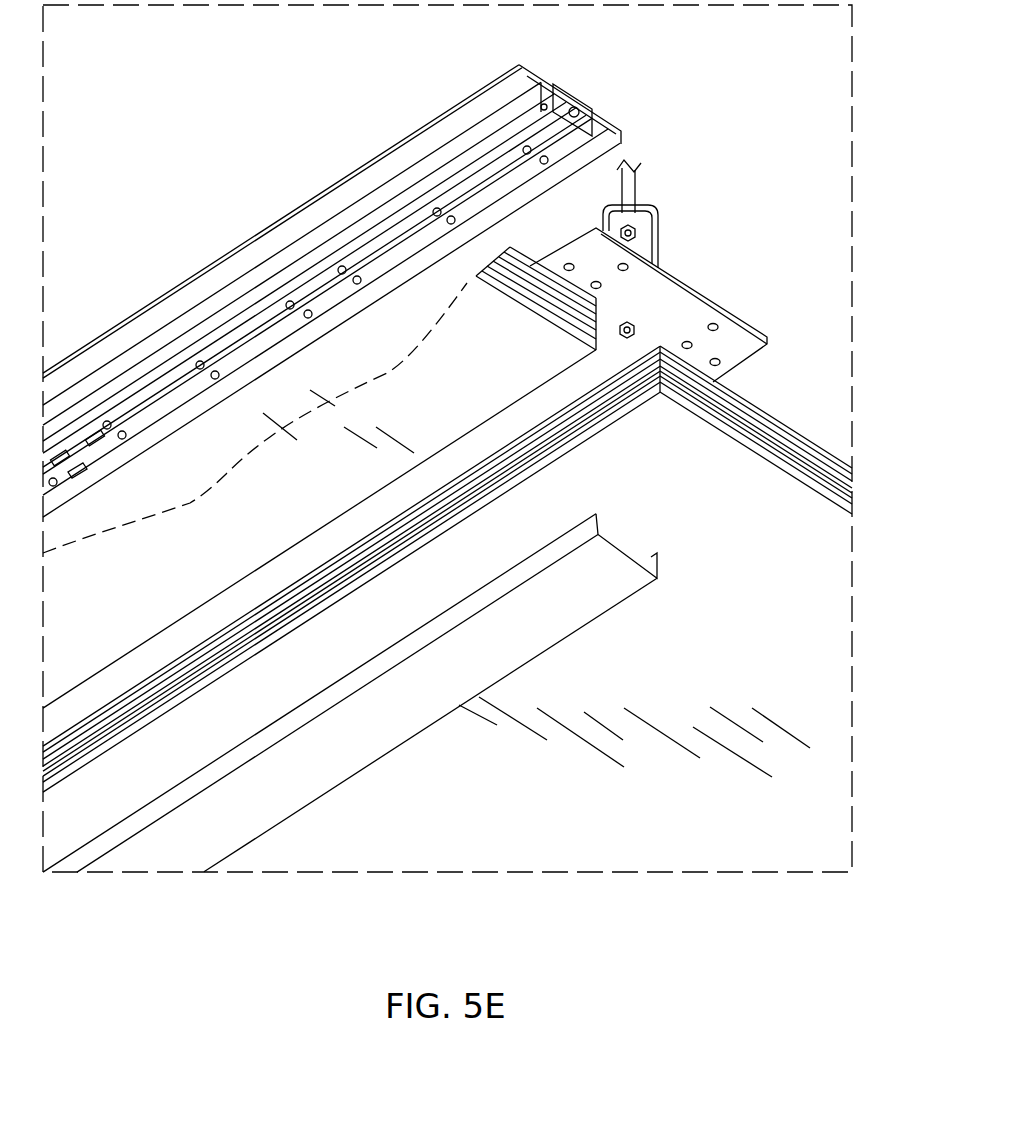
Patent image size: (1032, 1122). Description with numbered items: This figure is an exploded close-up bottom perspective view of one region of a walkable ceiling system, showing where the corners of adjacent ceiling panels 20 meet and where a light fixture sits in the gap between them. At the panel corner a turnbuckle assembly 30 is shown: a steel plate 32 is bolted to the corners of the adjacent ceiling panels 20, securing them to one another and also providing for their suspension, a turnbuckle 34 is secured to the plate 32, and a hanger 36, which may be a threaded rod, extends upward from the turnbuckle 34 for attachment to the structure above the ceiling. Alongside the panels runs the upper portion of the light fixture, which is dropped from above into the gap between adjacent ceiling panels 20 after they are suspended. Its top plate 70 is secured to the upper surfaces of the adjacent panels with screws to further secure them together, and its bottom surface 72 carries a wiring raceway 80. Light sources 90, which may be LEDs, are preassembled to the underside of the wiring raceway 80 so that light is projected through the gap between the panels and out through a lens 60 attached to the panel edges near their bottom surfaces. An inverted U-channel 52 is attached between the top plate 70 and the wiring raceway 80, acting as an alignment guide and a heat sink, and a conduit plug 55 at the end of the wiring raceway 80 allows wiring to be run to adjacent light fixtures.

The ceiling panel 20 is at (747, 930).
The turnbuckle assembly 30 is at (720, 225).
The steel plate 32 is at (745, 323).
The turnbuckle 34 is at (657, 232).
The hanger 36 is at (633, 187).
The inverted U-channel 52 is at (497, 125).
The conduit plug 55 is at (584, 117).
The lens 60 is at (584, 597).
The top plate 70 is at (332, 270).
The bottom surface 72 is at (451, 128).
The wiring raceway 80 is at (110, 415).
The light source 90 is at (452, 220).